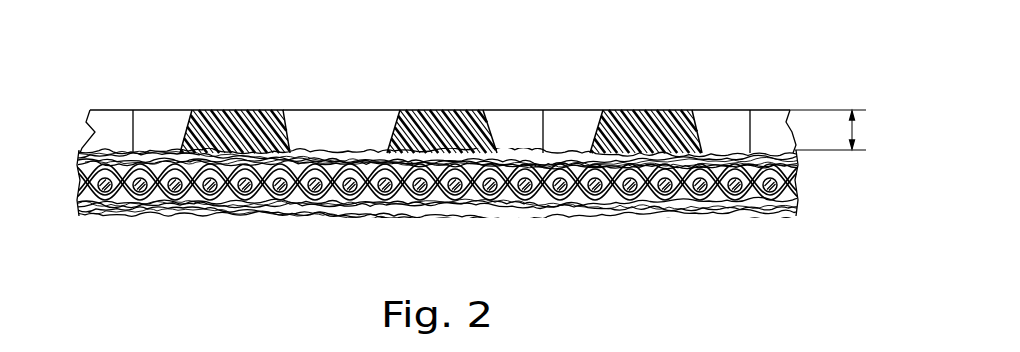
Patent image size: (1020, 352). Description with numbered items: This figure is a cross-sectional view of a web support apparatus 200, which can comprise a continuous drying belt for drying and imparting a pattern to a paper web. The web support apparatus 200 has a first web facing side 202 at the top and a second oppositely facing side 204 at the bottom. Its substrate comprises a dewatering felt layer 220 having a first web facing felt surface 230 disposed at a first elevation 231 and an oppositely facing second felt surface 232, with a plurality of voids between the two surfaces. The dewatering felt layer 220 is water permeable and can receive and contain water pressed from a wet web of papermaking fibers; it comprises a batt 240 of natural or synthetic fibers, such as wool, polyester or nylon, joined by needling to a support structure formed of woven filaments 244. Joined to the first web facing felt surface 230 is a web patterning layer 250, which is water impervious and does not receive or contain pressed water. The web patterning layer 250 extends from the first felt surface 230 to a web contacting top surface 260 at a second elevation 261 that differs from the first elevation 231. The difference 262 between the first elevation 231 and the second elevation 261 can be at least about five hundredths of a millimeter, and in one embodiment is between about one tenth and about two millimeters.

The web support apparatus 200 is at (148, 85).
The first web facing side 202 is at (538, 80).
The second oppositely facing side 204 is at (618, 232).
The dewatering felt layer 220 is at (55, 190).
The first web facing felt surface 230 is at (158, 152).
The first elevation 231 is at (820, 152).
The second felt surface 232 is at (104, 212).
The batt 240 is at (82, 158).
The woven filaments 244 is at (260, 190).
The web patterning layer 250 is at (248, 82).
The web contacting top surface 260 is at (258, 110).
The second elevation 261 is at (823, 110).
The difference 262 is at (855, 128).